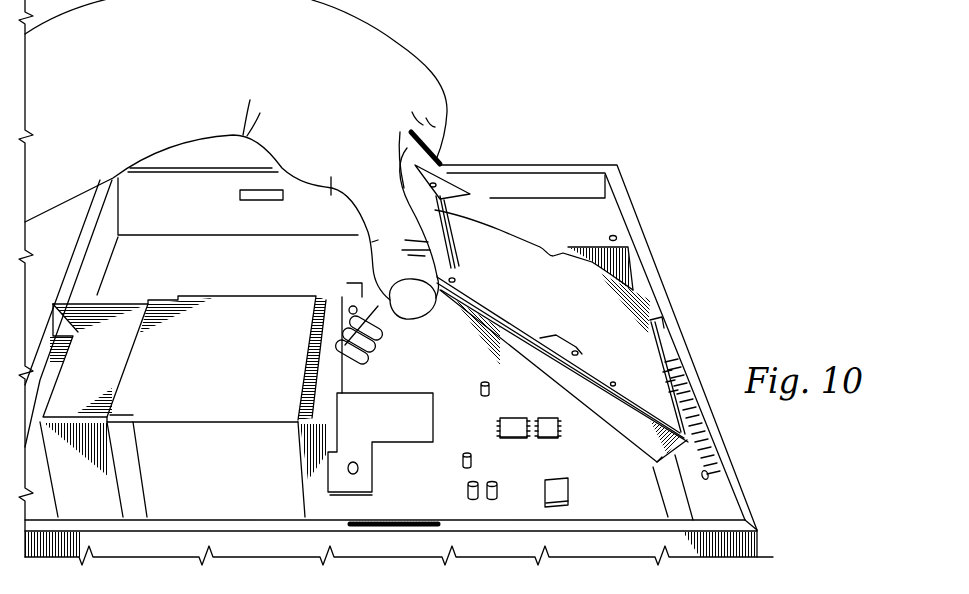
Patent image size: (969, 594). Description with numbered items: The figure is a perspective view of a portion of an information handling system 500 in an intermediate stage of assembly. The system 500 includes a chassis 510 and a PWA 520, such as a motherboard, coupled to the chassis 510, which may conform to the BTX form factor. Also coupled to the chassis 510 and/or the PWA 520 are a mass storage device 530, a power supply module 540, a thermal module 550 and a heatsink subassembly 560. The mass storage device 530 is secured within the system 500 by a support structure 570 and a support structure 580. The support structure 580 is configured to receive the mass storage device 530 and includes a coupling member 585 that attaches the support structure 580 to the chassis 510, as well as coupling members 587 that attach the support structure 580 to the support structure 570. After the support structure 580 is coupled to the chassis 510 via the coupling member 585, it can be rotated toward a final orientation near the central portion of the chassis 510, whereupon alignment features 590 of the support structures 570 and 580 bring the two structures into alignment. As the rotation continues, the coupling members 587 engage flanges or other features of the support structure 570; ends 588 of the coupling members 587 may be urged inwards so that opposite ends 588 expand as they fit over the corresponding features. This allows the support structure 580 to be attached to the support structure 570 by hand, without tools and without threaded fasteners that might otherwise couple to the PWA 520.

The information handling system 500 is at (551, 80).
The chassis 510 is at (648, 258).
The PWA 520 is at (653, 507).
The mass storage device 530 is at (505, 222).
The power supply module 540 is at (610, 218).
The thermal module 550 is at (113, 360).
The heatsink subassembly 560 is at (228, 302).
The support structure 570 is at (365, 478).
The support structure 580 is at (622, 430).
The coupling member 585 is at (660, 320).
The coupling members 587 is at (383, 333).
The ends 588 is at (440, 158).
The alignment features 590 is at (345, 290).